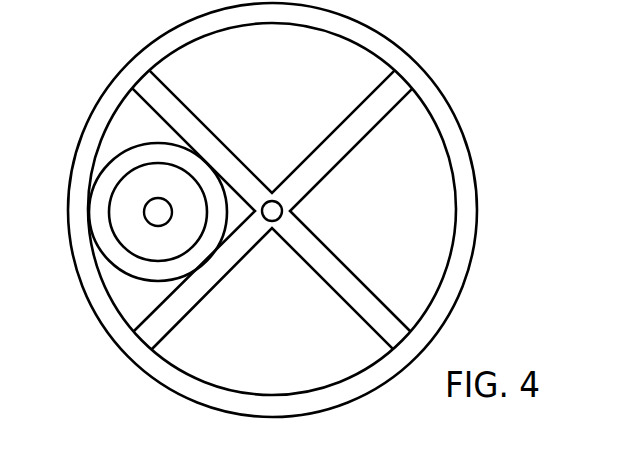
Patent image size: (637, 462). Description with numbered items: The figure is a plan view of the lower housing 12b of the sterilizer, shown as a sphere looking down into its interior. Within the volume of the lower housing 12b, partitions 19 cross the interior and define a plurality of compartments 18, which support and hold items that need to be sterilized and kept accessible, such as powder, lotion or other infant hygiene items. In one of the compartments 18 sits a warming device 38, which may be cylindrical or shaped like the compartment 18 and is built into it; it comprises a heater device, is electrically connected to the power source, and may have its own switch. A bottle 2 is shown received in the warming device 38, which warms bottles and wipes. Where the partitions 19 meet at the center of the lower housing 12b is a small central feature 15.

The lower housing 12b is at (474, 157).
The compartment 18 is at (432, 226).
The partition 19 is at (148, 340).
The central hub 15 is at (273, 210).
The warming device 38 is at (127, 160).
The bottle 2 is at (137, 193).